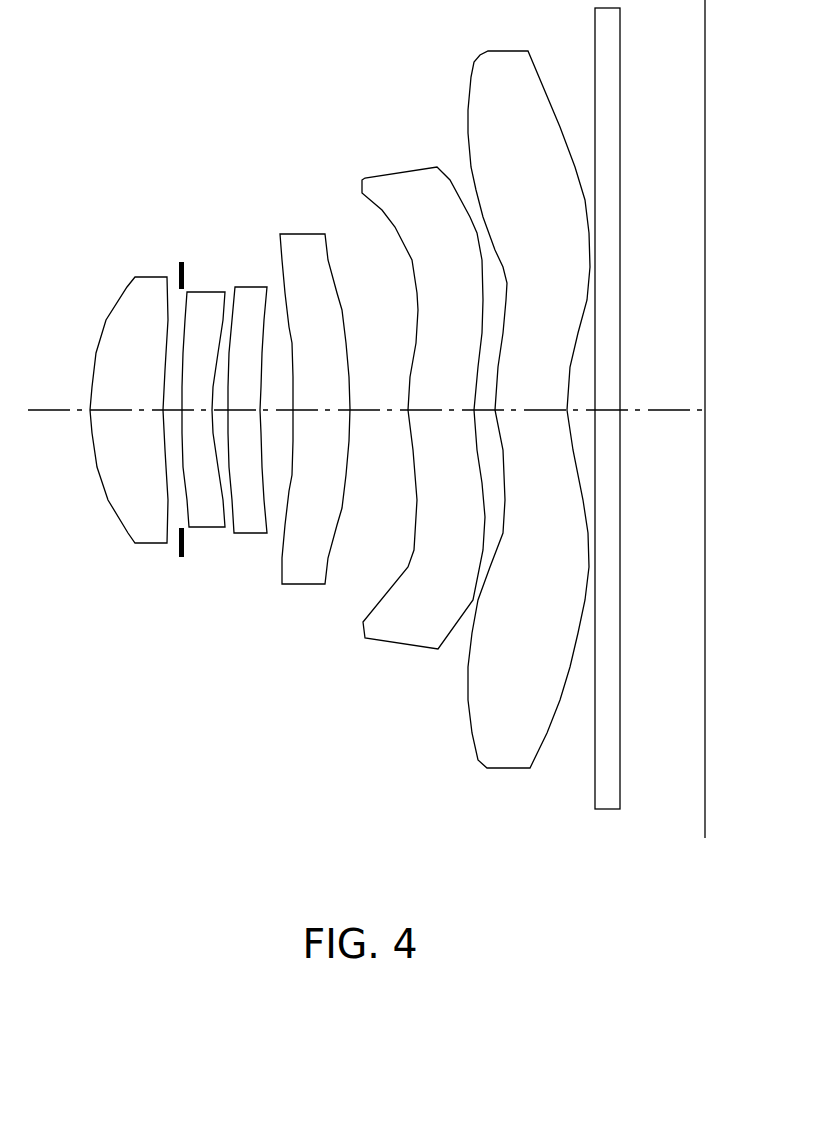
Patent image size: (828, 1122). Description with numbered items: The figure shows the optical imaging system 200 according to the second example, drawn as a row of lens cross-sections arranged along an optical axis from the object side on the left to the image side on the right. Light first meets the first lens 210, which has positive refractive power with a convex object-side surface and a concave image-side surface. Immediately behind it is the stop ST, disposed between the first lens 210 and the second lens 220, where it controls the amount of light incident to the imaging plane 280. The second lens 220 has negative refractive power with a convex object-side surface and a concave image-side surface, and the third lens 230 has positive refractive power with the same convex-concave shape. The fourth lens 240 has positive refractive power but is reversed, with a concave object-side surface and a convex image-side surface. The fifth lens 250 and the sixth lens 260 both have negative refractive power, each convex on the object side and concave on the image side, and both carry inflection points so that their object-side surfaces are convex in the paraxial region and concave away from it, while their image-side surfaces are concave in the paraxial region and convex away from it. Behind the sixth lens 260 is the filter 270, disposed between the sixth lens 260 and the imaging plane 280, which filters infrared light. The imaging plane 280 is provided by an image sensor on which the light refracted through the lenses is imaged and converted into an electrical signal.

The optical imaging system 200 is at (239, 105).
The first lens 210 is at (150, 544).
The second lens 220 is at (207, 528).
The third lens 230 is at (252, 534).
The fourth lens 240 is at (303, 585).
The fifth lens 250 is at (412, 650).
The sixth lens 260 is at (507, 769).
The filter 270 is at (608, 810).
The imaging plane 280 is at (705, 813).
The stop ST is at (186, 270).